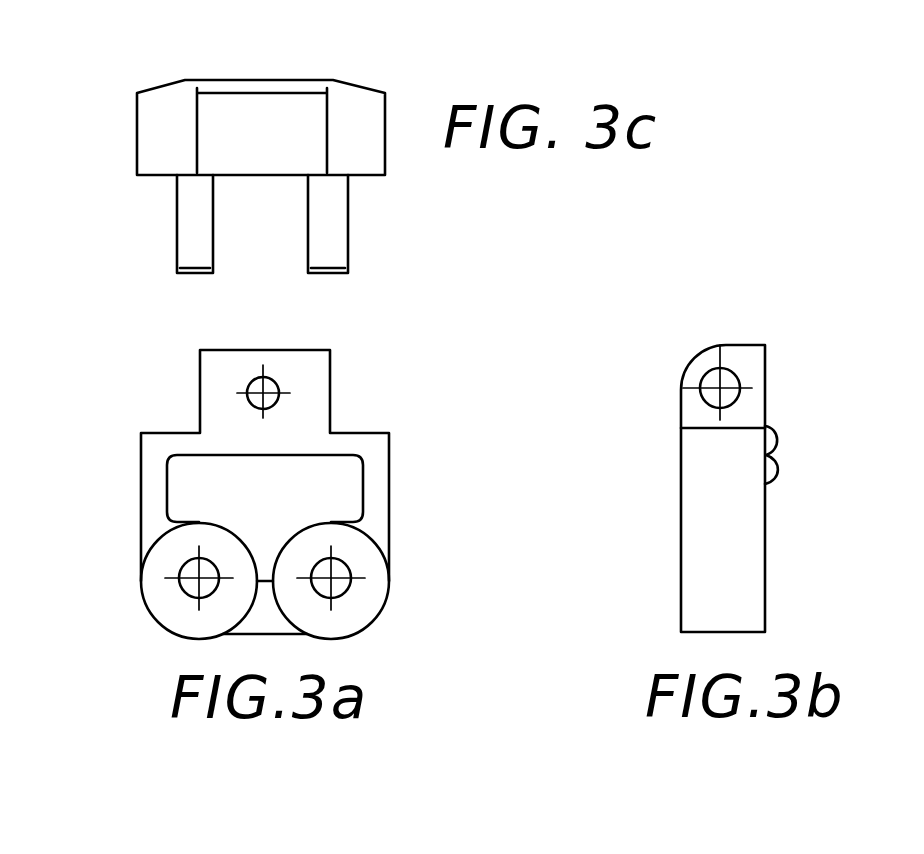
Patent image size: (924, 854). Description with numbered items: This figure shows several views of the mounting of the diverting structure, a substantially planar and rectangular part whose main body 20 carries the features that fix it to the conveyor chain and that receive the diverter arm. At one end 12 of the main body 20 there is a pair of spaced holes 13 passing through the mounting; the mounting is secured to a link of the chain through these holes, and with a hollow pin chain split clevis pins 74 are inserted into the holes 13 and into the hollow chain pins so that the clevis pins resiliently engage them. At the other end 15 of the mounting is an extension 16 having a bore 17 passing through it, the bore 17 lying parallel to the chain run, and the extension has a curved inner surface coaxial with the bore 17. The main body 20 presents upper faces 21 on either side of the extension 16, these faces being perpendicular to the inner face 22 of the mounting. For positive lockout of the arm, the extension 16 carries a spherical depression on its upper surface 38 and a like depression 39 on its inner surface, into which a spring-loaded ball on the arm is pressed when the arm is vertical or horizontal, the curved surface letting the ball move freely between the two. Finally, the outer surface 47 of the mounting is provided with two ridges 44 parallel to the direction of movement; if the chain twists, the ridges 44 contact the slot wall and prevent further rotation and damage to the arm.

In FIG. 3A, the one end 12 is at (298, 637).
In FIG. 3A, the spaced holes 13 is at (198, 577).
In FIG. 3A, the other end 15 is at (273, 427).
In FIG. 3A, the extension 16 is at (208, 368).
In FIG. 3B, the bore 17 is at (730, 386).
In FIG. 3A, the main body 20 is at (390, 512).
In FIG. 3A, the upper faces 21 is at (373, 428).
In FIG. 3B, the upper faces 21 is at (695, 427).
In FIG. 3C, the inner face 22 is at (310, 177).
In FIG. 3B, the inner face 22 is at (681, 547).
In FIG. 3A, the upper surface 38 is at (223, 350).
In FIG. 3A, the depression 39 is at (268, 388).
In FIG. 3C, the ridges 44 is at (258, 80).
In FIG. 3B, the ridges 44 is at (782, 437).
In FIG. 3B, the outer surface 47 is at (765, 553).
In FIG. 3C, the split clevis pins 74 is at (176, 240).